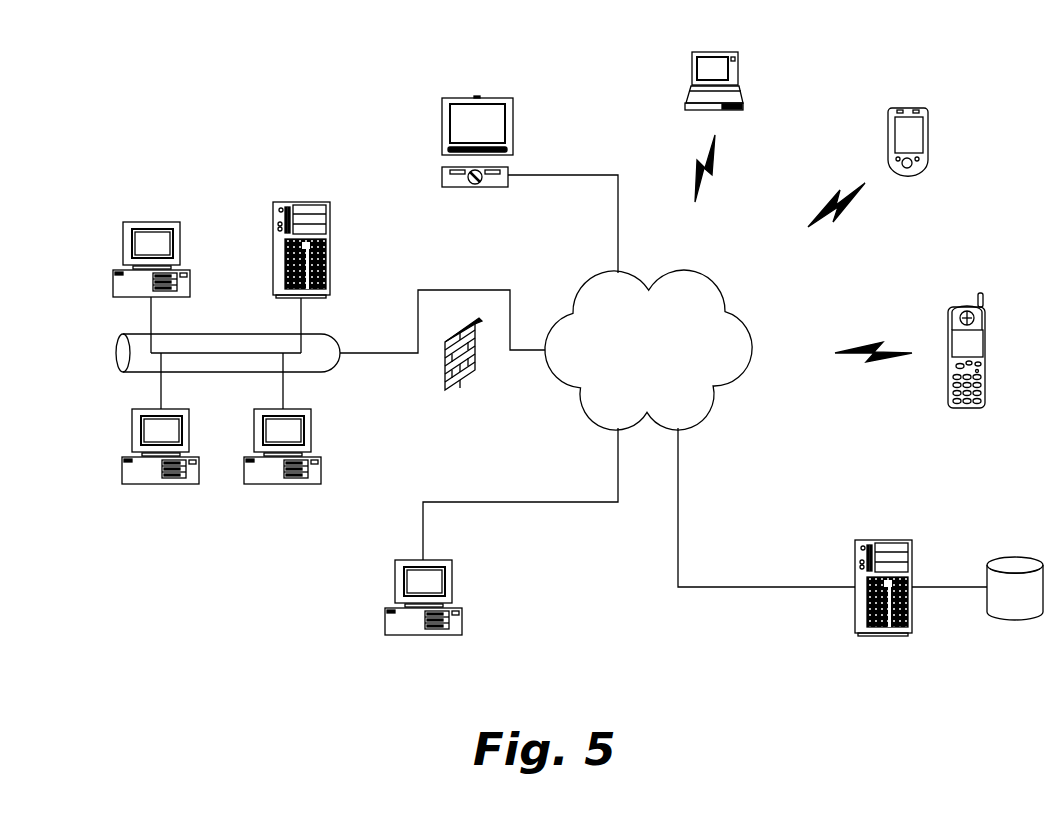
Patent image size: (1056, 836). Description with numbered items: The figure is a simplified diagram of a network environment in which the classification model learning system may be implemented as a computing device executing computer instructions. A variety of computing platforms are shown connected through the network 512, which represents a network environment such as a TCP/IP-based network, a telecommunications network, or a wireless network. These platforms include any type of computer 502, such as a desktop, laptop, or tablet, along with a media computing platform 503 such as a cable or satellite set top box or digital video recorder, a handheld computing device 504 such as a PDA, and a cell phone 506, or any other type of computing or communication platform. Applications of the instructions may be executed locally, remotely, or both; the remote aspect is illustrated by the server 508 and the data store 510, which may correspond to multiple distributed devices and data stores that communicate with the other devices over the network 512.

The computer 502 is at (122, 248).
The media computing platform 503 is at (442, 173).
The handheld computing device 504 is at (893, 110).
The cell phone 506 is at (952, 313).
The server 508 is at (863, 540).
The data store 510 is at (1013, 558).
The network 512 is at (588, 288).